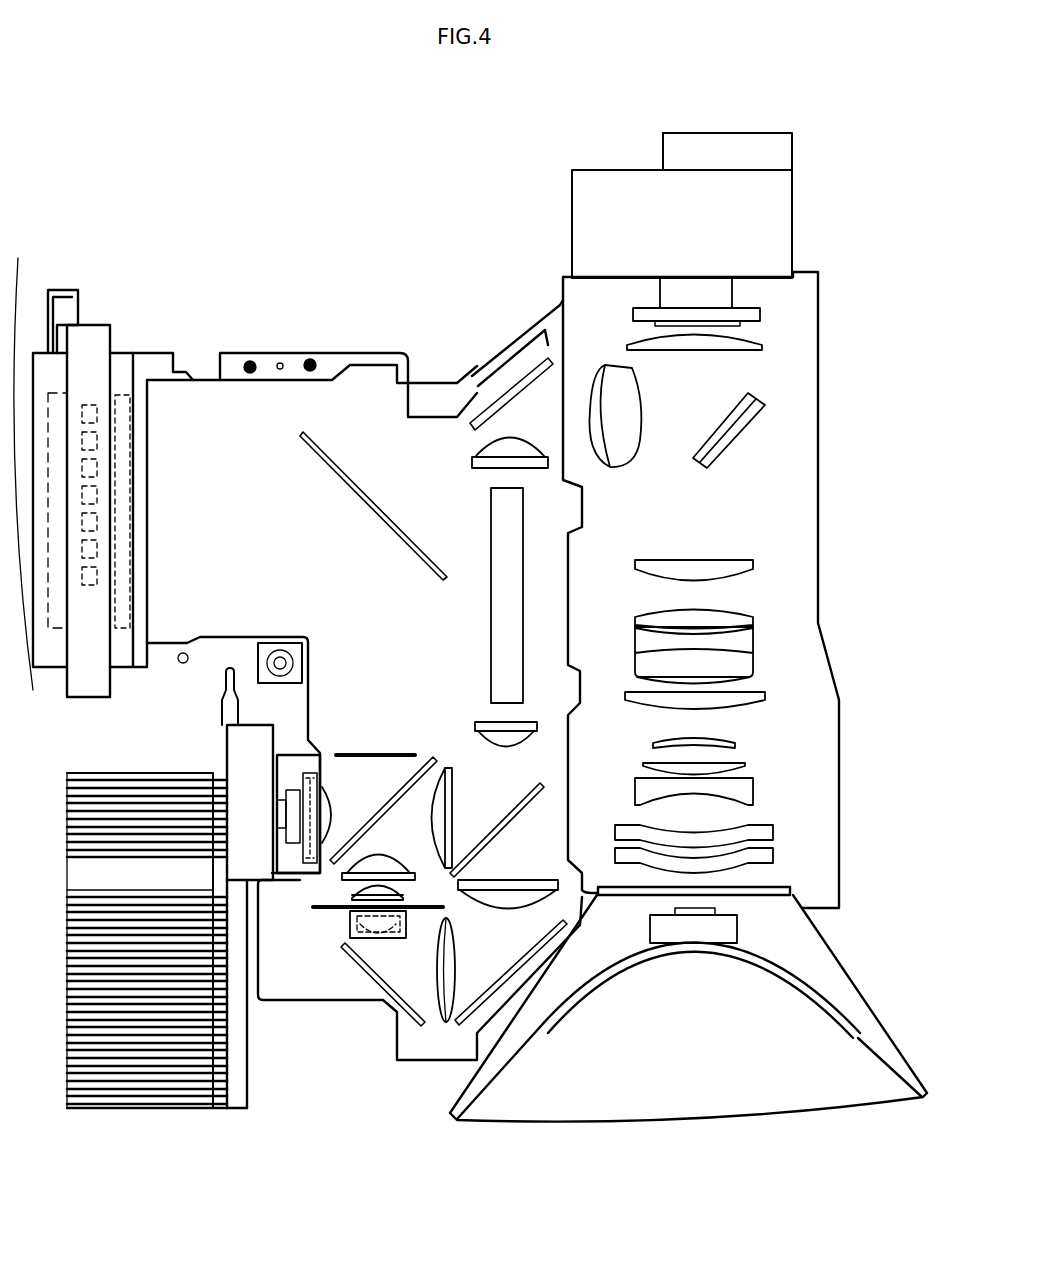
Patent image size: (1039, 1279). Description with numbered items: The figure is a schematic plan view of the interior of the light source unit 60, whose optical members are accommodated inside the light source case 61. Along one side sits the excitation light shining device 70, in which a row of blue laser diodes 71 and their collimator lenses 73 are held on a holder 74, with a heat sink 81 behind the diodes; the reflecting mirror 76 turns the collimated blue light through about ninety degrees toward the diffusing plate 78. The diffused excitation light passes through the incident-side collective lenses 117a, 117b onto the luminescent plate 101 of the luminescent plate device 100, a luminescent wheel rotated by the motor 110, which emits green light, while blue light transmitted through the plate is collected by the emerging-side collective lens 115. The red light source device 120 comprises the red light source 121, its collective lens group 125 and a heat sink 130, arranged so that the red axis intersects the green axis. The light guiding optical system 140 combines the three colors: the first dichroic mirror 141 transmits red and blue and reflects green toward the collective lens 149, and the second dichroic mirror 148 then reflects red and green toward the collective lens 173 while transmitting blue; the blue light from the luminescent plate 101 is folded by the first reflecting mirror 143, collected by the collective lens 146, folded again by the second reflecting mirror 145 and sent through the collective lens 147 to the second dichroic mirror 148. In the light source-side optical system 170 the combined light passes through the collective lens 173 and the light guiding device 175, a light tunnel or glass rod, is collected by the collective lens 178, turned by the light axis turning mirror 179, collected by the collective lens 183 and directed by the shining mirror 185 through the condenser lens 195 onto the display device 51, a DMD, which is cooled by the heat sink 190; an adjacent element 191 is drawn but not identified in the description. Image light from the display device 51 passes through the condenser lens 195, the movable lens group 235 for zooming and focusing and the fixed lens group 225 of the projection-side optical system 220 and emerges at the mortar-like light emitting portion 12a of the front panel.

The light emitting portion 12a is at (660, 1087).
The display device 51 is at (735, 322).
The light source unit 60 is at (157, 298).
The light source case 61 is at (252, 348).
The excitation light shining device 70 is at (82, 348).
The blue laser diodes 71 is at (98, 605).
The collimator lenses 73 is at (133, 593).
The holder 74 is at (88, 630).
The reflecting mirror 76 is at (322, 458).
The diffusing plate 78 is at (355, 752).
The heat sink 81 is at (50, 657).
The luminescent plate device 100 is at (238, 1000).
The luminescent plate 101 is at (245, 955).
The motor 110 is at (320, 933).
The collective lens 115 is at (363, 940).
The collective lens 117a is at (383, 853).
The collective lens 117b is at (395, 903).
The red light source device 120 is at (245, 860).
The red light source 121 is at (273, 817).
The collective lens group 125 is at (287, 780).
The heat sink 130 is at (183, 1108).
The light guiding optical system 140 is at (452, 738).
The first dichroic mirror 141 is at (373, 857).
The first reflecting mirror 143 is at (388, 993).
The second reflecting mirror 145 is at (502, 975).
The collective lens 146 is at (443, 1017).
The collective lens 147 is at (510, 878).
The second dichroic mirror 148 is at (540, 790).
The collective lens 149 is at (453, 817).
The light source-side optical system 170 is at (545, 345).
The collective lens 173 is at (483, 735).
The light guiding device 175 is at (490, 630).
The collective lens 178 is at (478, 468).
The light axis turning mirror 179 is at (470, 430).
The collective lens 183 is at (616, 468).
The shining mirror 185 is at (753, 423).
The heat sink 190 is at (780, 197).
The modulator housing 191 is at (780, 237).
The condenser lens 195 is at (740, 347).
The projection-side optical system 220 is at (783, 697).
The fixed lens group 225 is at (767, 798).
The movable lens group 235 is at (742, 593).